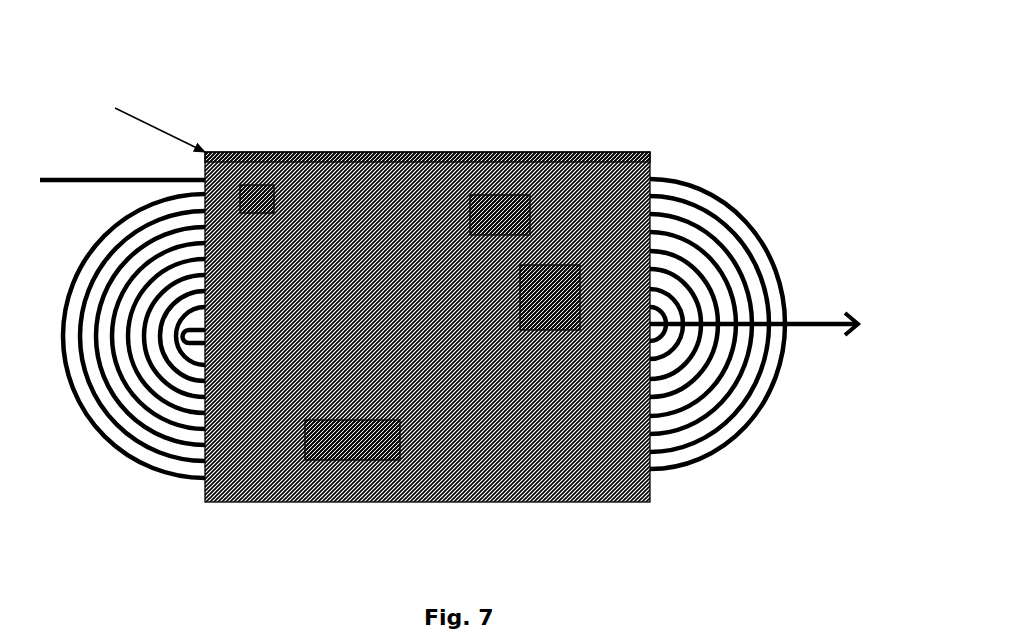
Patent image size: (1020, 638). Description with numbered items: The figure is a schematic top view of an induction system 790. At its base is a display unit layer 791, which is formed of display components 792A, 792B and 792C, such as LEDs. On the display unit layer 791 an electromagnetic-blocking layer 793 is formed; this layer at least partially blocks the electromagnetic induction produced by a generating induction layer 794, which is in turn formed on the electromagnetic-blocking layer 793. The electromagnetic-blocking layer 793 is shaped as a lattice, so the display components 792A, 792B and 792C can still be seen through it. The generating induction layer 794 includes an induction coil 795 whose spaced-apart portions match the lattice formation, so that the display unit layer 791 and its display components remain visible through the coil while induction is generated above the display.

The system 790 is at (186, 82).
The display unit layer 791 is at (257, 197).
The display component 792A is at (518, 223).
The display component 792B is at (568, 317).
The display component 792C is at (390, 448).
The electromagnetic-blocking layer 793 is at (435, 157).
The generating induction layer 794 is at (694, 190).
The induction coil 795 is at (282, 402).